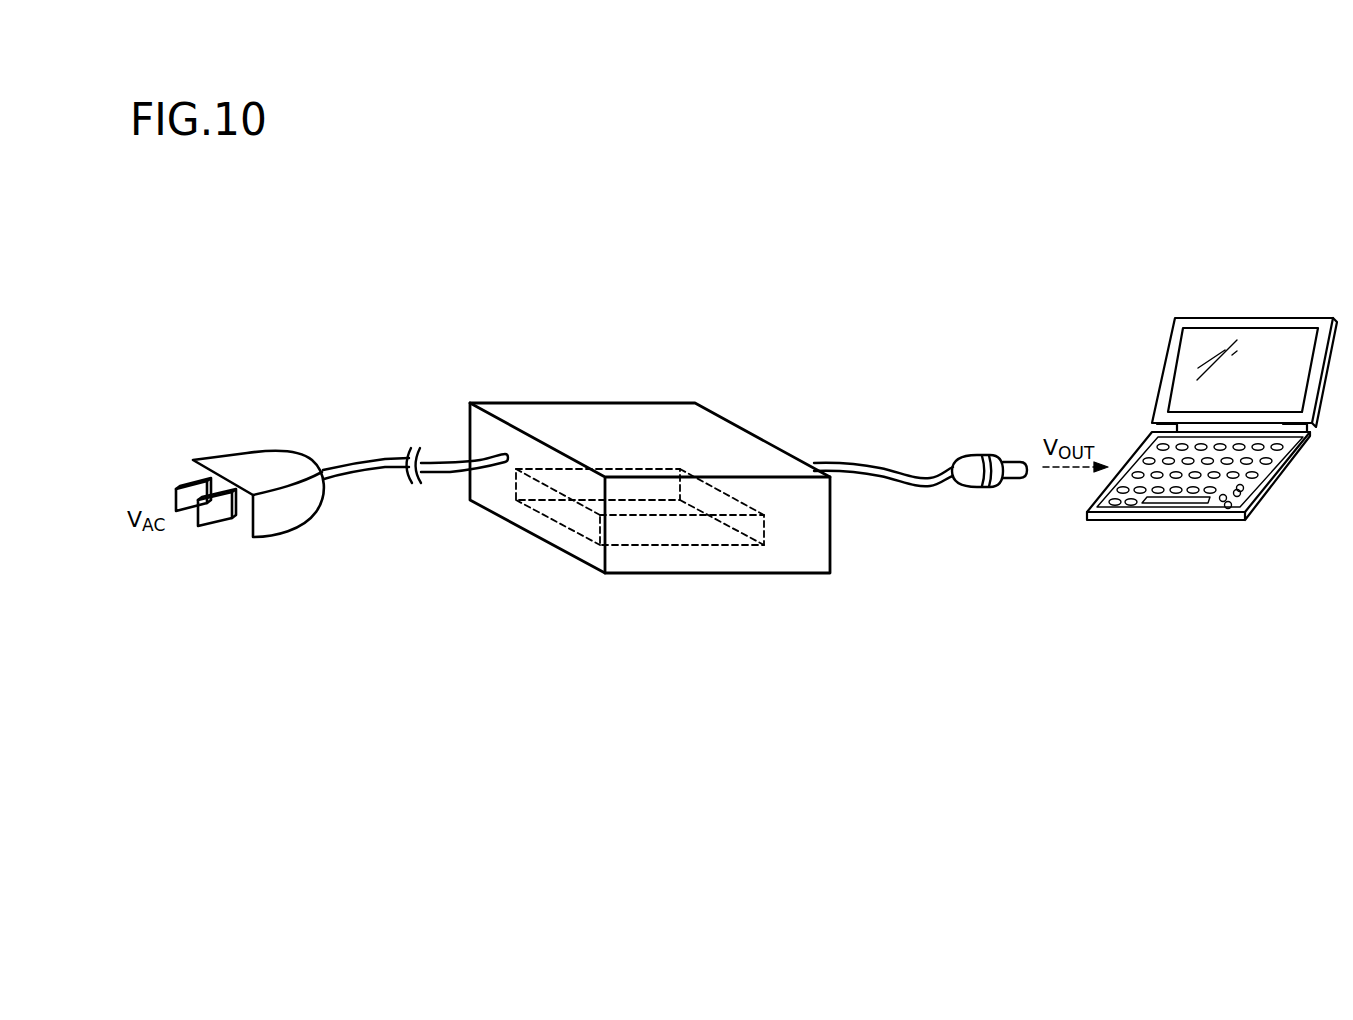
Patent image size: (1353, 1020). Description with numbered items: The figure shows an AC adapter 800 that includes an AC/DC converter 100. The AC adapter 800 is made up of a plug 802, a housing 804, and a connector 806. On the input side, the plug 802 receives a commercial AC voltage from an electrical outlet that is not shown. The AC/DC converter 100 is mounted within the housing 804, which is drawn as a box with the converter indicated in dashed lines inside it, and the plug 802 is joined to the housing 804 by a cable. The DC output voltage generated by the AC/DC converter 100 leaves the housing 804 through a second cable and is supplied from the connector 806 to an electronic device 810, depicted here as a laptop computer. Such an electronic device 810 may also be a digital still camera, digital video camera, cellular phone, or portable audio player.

The plug 802 is at (258, 467).
The housing 804 is at (573, 402).
The AC/DC converter 100 is at (670, 530).
The connector 806 is at (972, 453).
The electronic device 810 is at (1262, 315).
The AC adapter 800 is at (770, 765).